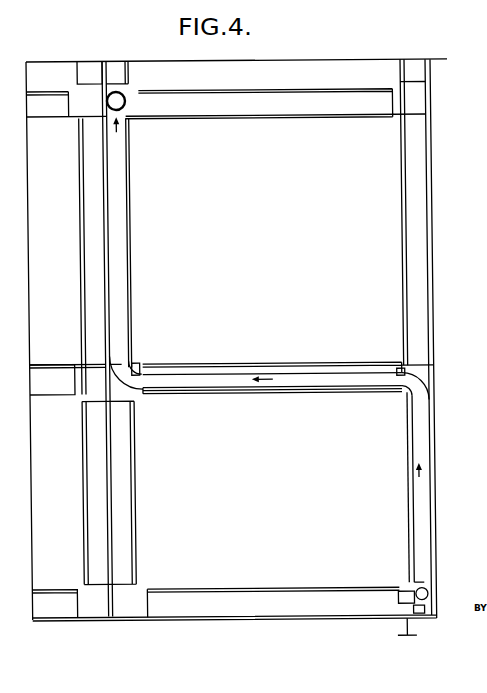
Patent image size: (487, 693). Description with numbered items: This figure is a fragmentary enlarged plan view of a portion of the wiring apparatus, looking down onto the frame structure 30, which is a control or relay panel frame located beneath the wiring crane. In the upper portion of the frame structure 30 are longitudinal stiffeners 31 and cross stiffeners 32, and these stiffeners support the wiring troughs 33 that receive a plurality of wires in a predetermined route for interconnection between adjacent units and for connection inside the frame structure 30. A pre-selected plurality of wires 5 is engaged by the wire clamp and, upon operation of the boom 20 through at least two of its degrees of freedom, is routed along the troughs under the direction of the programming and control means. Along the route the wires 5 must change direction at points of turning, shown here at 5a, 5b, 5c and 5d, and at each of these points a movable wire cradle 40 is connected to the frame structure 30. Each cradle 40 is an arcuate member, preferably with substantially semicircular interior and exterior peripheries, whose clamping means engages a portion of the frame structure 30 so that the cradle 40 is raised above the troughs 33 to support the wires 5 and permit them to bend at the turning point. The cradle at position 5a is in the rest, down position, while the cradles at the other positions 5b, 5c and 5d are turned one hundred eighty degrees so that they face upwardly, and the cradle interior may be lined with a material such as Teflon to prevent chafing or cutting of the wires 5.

The boom 20 is at (125, 96).
The frame structure 30 is at (433, 244).
The longitudinal stiffener 31 is at (297, 120).
The cross stiffener 32 is at (100, 293).
The wiring trough 33 is at (280, 95).
The movable wire cradle 40 is at (137, 394).
The wires 5 is at (400, 638).
The point of turning 5a is at (392, 603).
The point of turning 5b is at (422, 597).
The point of turning 5c is at (416, 388).
The point of turning 5d is at (131, 369).